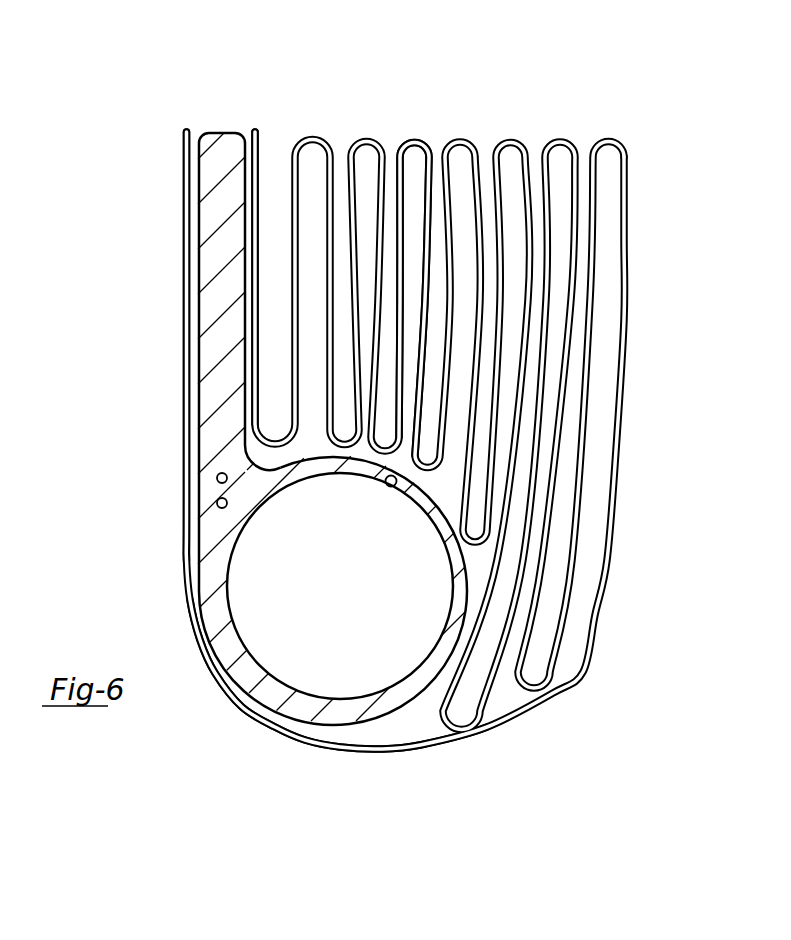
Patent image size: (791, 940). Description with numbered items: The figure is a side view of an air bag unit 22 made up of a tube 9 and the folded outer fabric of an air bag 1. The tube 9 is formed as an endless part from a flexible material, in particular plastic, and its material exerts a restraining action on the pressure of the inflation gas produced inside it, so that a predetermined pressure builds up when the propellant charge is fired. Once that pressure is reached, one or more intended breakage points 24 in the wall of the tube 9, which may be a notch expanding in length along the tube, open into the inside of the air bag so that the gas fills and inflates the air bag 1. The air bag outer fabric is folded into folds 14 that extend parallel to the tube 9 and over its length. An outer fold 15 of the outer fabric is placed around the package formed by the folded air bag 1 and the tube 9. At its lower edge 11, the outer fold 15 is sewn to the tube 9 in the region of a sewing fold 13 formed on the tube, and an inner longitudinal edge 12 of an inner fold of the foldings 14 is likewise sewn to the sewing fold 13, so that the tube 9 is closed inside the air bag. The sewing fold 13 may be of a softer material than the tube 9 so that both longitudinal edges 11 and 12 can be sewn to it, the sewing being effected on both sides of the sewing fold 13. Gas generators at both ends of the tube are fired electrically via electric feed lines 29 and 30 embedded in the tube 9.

The air bag 1 is at (415, 137).
The tube 9 is at (298, 705).
The lower edge 11 is at (187, 213).
The inner longitudinal edge 12 is at (257, 167).
The sewing fold 13 is at (220, 158).
The folds 14 is at (537, 140).
The outer fold 15 is at (213, 673).
The air bag unit 22 is at (590, 656).
The breakage point 24 is at (388, 478).
The electric feed line 29 is at (217, 502).
The electric feed line 30 is at (216, 477).